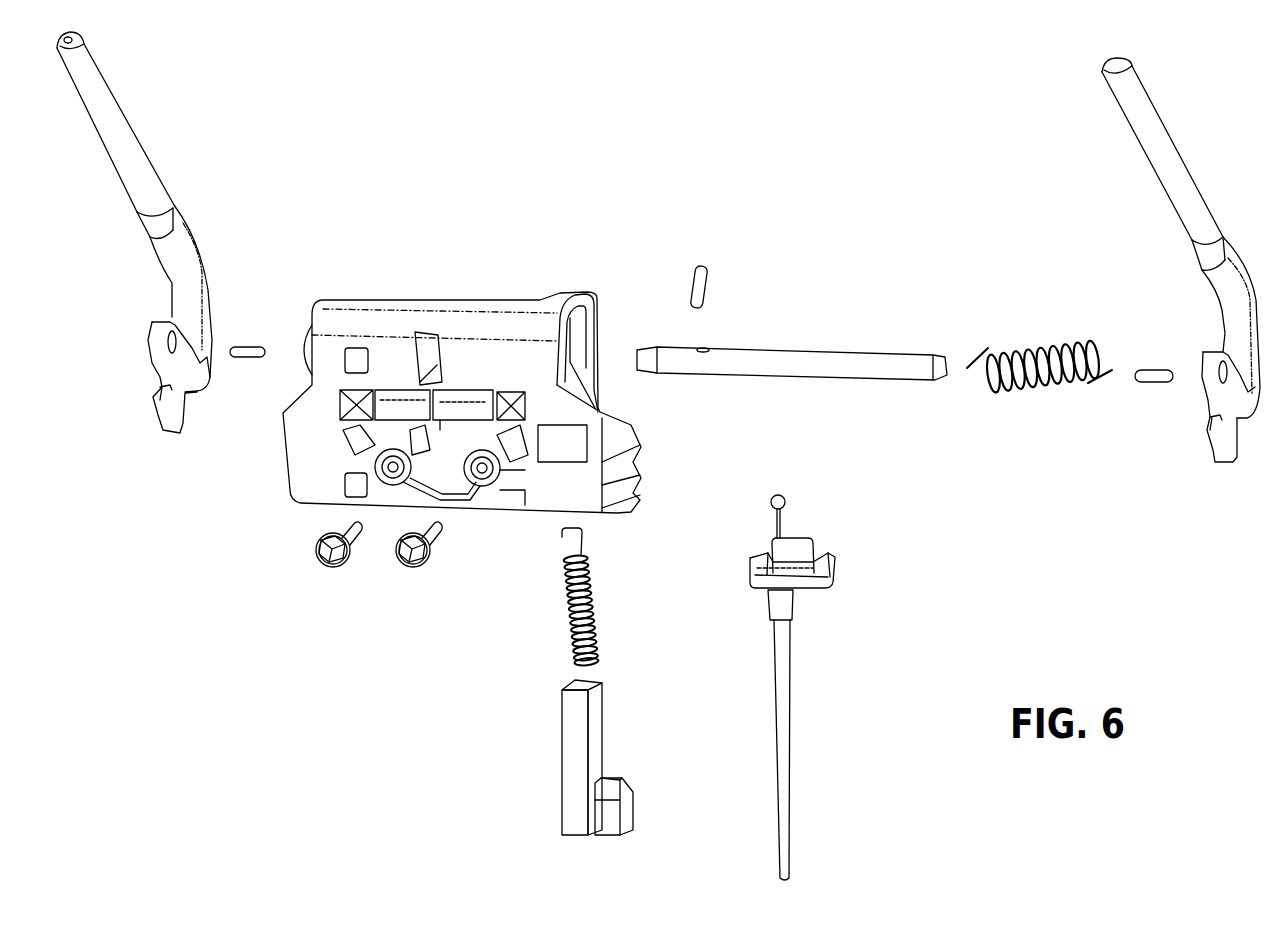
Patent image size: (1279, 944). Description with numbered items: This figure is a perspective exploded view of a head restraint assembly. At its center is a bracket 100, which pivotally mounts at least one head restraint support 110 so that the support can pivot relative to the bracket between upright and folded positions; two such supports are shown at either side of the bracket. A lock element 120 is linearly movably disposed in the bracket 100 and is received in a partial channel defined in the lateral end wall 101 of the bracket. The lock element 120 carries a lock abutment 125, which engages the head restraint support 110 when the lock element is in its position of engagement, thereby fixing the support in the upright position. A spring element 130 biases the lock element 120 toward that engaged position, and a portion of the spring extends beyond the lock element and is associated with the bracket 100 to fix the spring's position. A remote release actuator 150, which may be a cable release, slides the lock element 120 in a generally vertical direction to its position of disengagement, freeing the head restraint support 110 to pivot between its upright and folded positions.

The bracket 100 is at (456, 298).
The lateral end wall 101 is at (568, 375).
The head restraint support 110 is at (184, 198).
The lock element 120 is at (556, 773).
The lock abutment 125 is at (613, 782).
The spring element 130 is at (566, 639).
The remote release actuator 150 is at (804, 736).